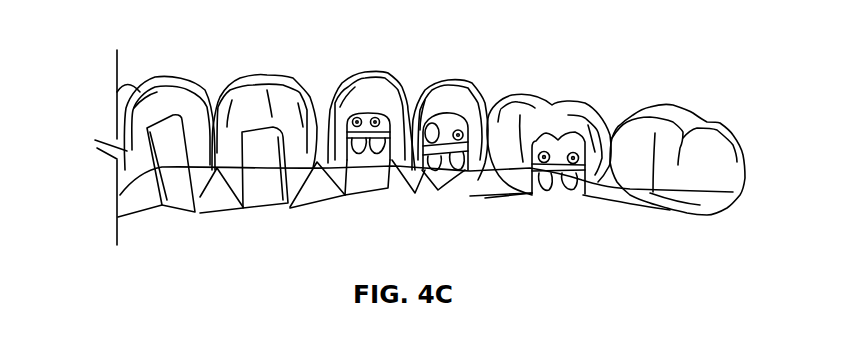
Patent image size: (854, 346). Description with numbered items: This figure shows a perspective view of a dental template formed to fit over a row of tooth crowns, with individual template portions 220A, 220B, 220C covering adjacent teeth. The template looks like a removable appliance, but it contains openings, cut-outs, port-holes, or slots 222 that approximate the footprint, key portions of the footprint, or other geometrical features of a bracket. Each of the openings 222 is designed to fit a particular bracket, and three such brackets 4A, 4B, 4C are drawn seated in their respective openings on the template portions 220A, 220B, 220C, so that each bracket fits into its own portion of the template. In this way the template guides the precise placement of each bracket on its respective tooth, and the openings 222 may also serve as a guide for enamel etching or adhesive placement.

The openings 222 is at (272, 118).
The tooth 220A is at (378, 74).
The tooth 220B is at (470, 82).
The tooth 220C is at (552, 112).
The bracket 4A is at (347, 135).
The bracket 4B is at (464, 172).
The bracket 4C is at (574, 180).